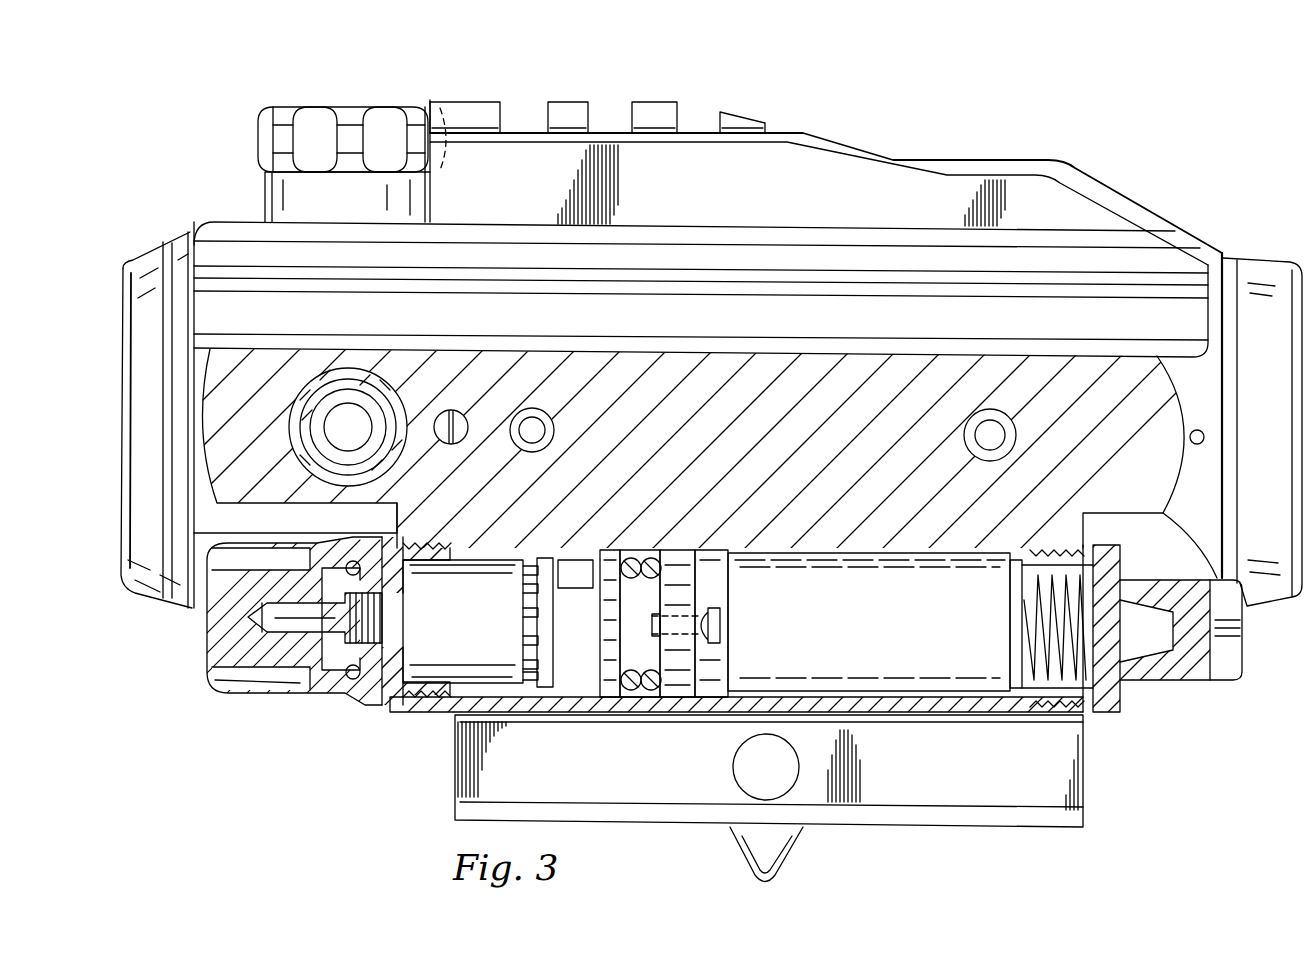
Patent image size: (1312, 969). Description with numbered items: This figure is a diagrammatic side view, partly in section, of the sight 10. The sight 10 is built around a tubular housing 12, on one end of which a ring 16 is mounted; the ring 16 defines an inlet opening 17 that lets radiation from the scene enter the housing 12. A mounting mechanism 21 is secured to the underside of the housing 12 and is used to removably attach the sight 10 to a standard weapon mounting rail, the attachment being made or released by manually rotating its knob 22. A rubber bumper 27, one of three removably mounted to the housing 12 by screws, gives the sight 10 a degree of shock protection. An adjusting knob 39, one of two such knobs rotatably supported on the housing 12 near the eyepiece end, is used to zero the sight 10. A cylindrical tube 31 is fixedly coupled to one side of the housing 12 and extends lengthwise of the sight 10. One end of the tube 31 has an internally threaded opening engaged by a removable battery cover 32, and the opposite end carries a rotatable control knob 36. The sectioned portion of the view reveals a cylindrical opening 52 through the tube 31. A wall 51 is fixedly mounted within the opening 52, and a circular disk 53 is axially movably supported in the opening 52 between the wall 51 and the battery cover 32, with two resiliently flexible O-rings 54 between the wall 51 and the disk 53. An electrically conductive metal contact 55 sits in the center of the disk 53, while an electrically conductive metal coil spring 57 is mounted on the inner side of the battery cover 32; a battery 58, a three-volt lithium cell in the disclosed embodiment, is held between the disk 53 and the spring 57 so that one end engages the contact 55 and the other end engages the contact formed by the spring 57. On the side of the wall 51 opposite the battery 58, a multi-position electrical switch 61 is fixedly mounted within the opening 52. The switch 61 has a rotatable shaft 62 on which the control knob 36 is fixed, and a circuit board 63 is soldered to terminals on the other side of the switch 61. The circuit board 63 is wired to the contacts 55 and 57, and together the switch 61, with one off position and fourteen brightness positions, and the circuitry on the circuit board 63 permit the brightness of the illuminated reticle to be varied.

The sight 10 is at (919, 95).
The tubular housing 12 is at (718, 316).
The ring 16 is at (1270, 262).
The inlet opening 17 is at (148, 255).
The mounting mechanism 21 is at (866, 828).
The knob 22 is at (738, 853).
The rubber bumper 27 is at (692, 133).
The cylindrical tube 31 is at (908, 718).
The removable battery cover 32 is at (1172, 680).
The rotatable control knob 36 is at (248, 695).
The adjusting knob 39 is at (258, 140).
The wall 51 is at (628, 640).
The cylindrical opening 52 is at (565, 695).
The circular disk 53 is at (702, 690).
The O-rings 54 is at (645, 690).
The electrically conductive metal contact 55 is at (700, 612).
The electrically conductive metal coil spring 57 is at (1025, 620).
The battery 58 is at (881, 639).
The multi-position electrical switch 61 is at (478, 634).
The rotatable shaft 62 is at (300, 622).
The circuit board 63 is at (557, 656).